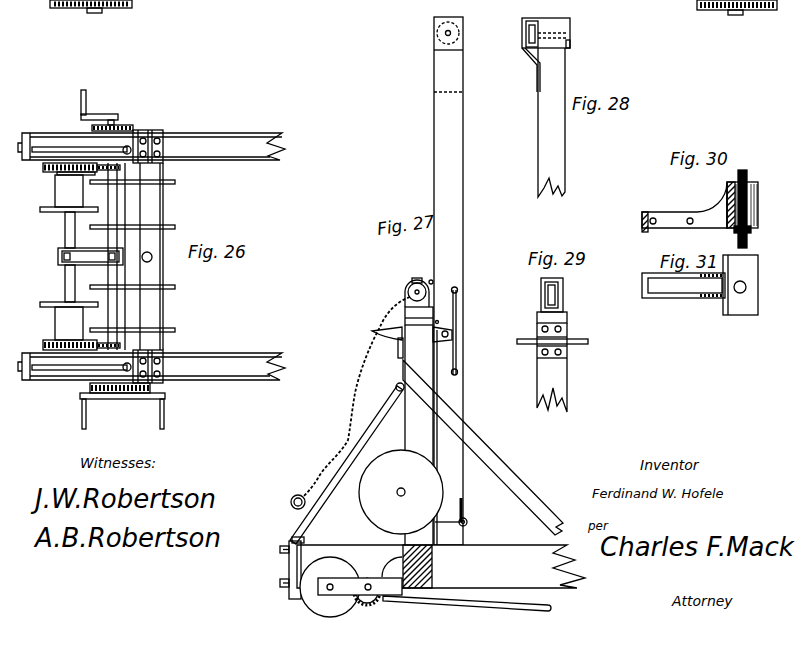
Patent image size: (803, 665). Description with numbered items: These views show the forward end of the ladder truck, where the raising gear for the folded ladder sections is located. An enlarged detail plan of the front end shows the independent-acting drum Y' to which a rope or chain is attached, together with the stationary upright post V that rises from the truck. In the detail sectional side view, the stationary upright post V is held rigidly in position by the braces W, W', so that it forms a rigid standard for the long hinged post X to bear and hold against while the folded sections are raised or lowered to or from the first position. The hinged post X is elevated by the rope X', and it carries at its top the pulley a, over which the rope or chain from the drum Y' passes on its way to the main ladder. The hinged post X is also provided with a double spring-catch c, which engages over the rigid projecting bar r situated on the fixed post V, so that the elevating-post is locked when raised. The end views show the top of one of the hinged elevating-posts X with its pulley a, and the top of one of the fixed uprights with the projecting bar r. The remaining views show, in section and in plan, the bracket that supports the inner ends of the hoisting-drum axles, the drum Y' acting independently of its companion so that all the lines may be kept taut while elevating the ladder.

In FIG. 26, the stationary upright post V is at (156, 131).
In FIG. 27, the stationary upright post V is at (419, 435).
In FIG. 26, the independent-acting drum Y' is at (81, 256).
In FIG. 27, the hinged post X is at (448, 281).
In FIG. 28, the hinged post X is at (551, 122).
In FIG. 27, the pulley a is at (464, 38).
In FIG. 28, the pulley a is at (525, 40).
In FIG. 27, the double spring-catch c is at (419, 328).
In FIG. 27, the rigid projecting bar r is at (398, 346).
In FIG. 29, the rigid projecting bar r is at (552, 350).
In FIG. 27, the rope X' is at (350, 403).
In FIG. 27, the brace W' is at (389, 492).
In FIG. 27, the brace W is at (483, 447).